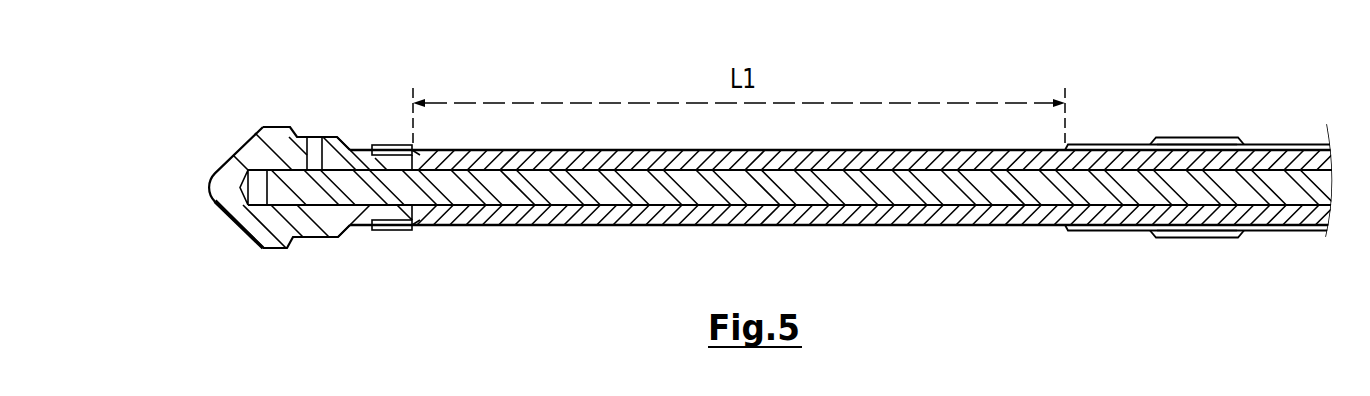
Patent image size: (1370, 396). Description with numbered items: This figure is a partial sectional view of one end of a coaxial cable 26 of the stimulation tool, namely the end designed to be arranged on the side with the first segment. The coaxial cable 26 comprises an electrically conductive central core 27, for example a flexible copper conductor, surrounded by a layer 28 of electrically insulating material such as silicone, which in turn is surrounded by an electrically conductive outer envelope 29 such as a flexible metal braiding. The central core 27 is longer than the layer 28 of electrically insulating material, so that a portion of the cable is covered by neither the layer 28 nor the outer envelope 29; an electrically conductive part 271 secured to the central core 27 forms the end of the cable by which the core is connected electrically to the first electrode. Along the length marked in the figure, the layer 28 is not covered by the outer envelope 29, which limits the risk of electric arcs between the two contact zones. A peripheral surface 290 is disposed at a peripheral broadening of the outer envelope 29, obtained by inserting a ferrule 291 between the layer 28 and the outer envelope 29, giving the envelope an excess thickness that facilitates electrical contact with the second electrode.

The coaxial cable 26 is at (340, 117).
The central core 27 is at (612, 197).
The layer of electrically insulating material 28 is at (972, 215).
The outer envelope 29 is at (1122, 143).
The electrically conductive part 271 is at (266, 227).
The peripheral surface 290 is at (1180, 138).
The ferrule 291 is at (1197, 142).